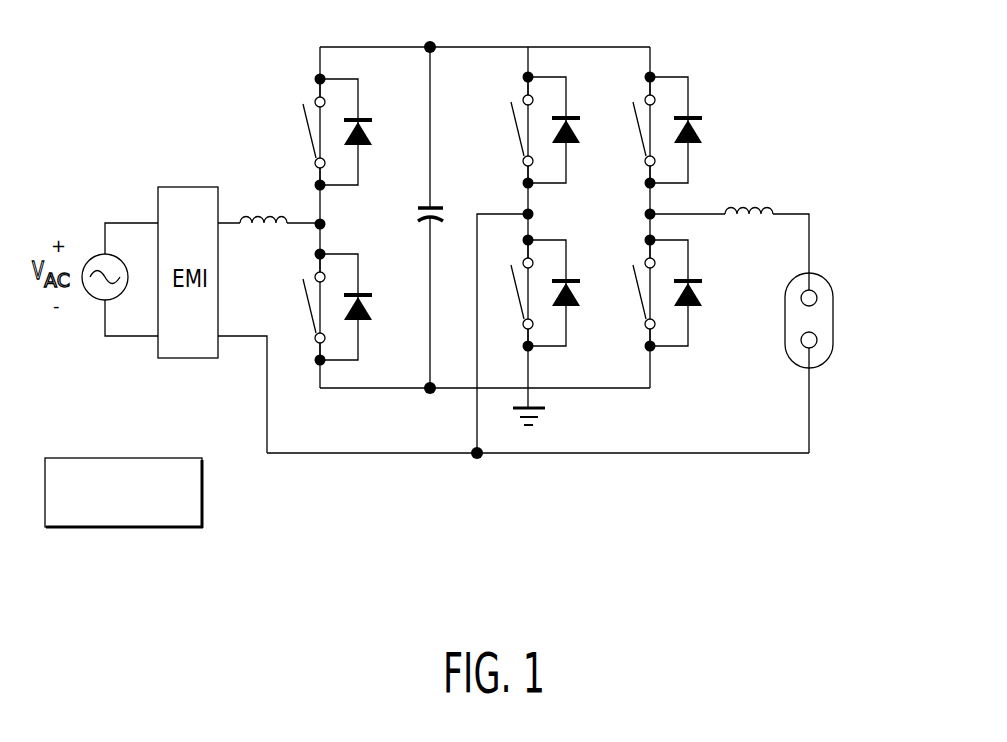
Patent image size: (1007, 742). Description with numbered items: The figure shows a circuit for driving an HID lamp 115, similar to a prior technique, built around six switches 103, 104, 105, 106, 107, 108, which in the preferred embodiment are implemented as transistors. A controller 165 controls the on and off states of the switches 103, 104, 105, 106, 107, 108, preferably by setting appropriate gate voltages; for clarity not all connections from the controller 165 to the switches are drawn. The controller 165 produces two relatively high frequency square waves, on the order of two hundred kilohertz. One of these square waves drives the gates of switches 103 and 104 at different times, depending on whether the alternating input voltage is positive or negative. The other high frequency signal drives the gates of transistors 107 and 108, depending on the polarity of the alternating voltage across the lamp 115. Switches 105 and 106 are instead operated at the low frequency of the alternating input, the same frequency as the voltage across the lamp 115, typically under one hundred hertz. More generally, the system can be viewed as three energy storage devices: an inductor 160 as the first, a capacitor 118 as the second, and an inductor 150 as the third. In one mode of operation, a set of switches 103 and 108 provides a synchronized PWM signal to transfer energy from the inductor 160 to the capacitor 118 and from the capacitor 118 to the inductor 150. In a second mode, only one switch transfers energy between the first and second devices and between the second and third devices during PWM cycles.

The switch 103 is at (358, 105).
The switch 104 is at (358, 335).
The switch 105 is at (567, 105).
The switch 106 is at (567, 318).
The switch 107 is at (689, 105).
The switch 108 is at (689, 275).
The capacitor 118 is at (438, 205).
The inductor 150 is at (744, 206).
The inductor 160 is at (261, 220).
The lamp 115 is at (785, 330).
The controller 165 is at (85, 458).